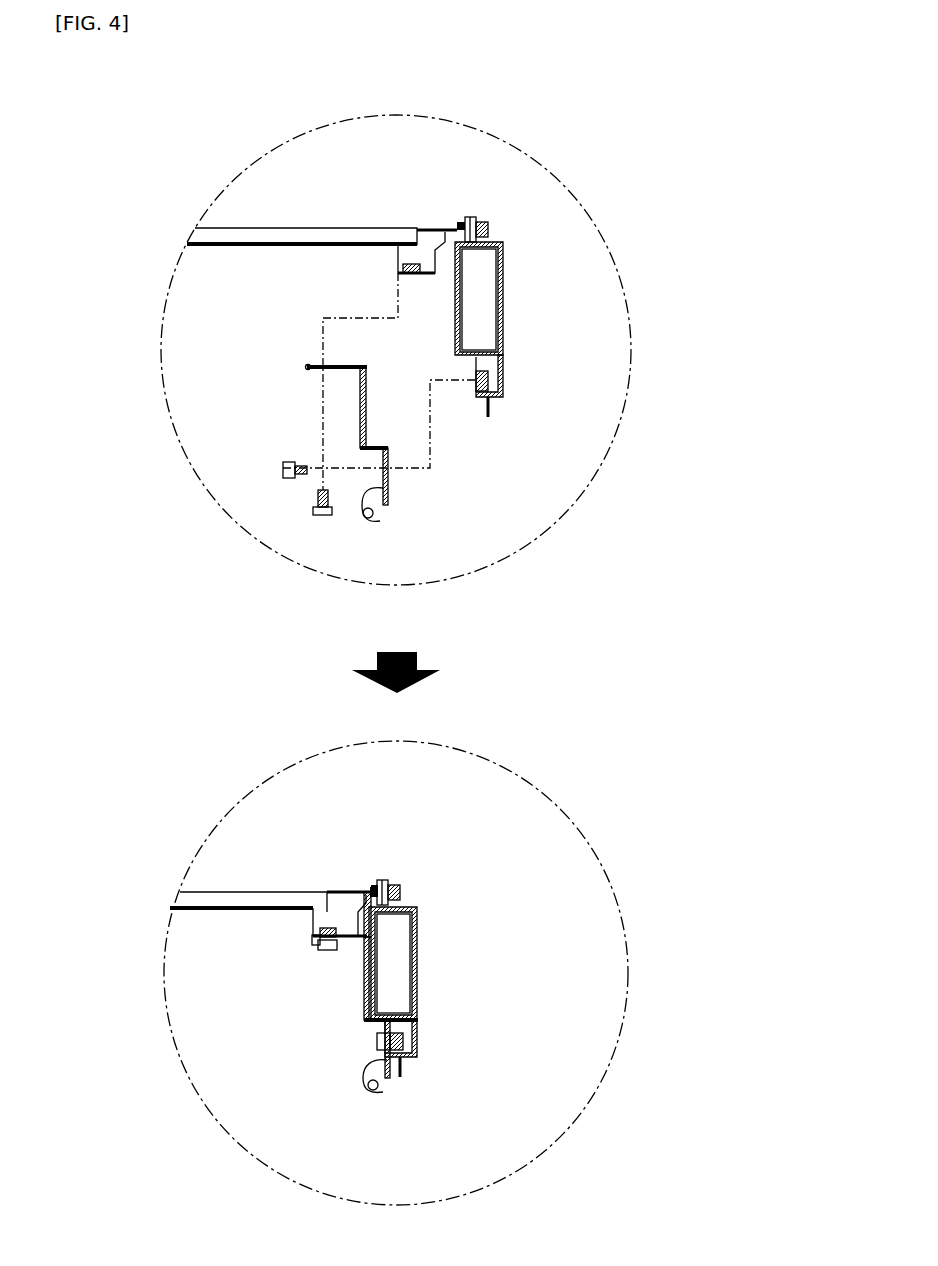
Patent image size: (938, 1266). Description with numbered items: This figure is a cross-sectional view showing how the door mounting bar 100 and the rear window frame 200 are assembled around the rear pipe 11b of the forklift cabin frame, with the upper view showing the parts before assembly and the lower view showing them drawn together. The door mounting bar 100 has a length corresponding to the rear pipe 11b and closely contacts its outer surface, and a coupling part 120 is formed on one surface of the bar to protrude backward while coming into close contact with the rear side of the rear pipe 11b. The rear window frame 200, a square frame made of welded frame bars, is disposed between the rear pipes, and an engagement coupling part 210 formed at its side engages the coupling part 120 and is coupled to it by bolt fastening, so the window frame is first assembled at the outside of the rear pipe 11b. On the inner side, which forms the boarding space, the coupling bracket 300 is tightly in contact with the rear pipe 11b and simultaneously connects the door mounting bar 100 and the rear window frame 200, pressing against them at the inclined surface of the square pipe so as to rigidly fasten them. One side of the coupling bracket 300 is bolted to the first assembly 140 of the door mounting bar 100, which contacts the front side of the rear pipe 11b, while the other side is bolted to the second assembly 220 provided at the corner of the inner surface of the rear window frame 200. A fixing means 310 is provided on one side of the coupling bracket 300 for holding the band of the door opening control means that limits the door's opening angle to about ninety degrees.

The rear window frame 200 is at (278, 228).
The second assembly 220 is at (408, 253).
The engagement coupling part 210 is at (465, 223).
The coupling part 120 is at (490, 235).
The rear pipe 11b is at (507, 273).
The door mounting bar 100 is at (505, 298).
The first assembly 140 is at (505, 363).
The coupling bracket 300 is at (360, 407).
The fixing means 310 is at (363, 523).